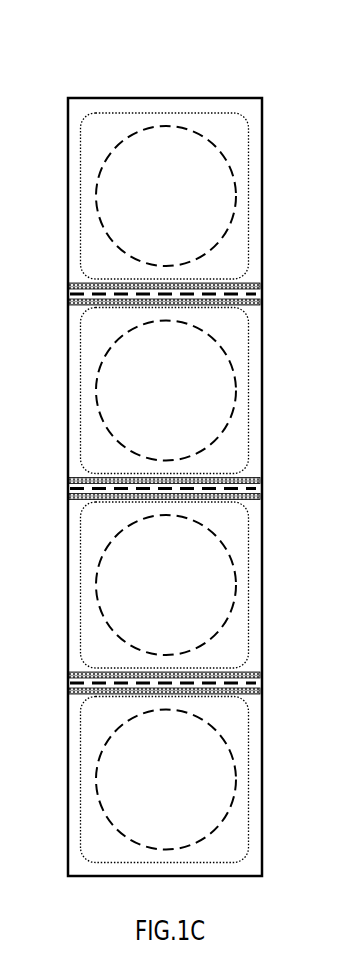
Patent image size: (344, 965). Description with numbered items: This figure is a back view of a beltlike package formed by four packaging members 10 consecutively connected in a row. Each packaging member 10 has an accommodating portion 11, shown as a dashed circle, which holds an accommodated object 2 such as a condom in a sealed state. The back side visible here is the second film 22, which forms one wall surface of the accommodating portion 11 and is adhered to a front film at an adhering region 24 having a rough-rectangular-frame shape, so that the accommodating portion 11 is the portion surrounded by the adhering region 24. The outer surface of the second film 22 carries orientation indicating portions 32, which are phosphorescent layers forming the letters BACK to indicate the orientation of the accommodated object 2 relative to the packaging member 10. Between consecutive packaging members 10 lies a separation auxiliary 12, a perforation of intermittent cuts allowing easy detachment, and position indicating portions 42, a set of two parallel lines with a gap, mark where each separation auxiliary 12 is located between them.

The packaging member 10 is at (137, 452).
The accommodating portion 11 is at (164, 458).
The separation auxiliary 12 is at (105, 293).
The accommodated object 2 is at (234, 172).
The second film 22 is at (205, 107).
The adhering region 24 is at (245, 113).
The orientation indicating portion 32 is at (206, 233).
The position indicating portion 42 is at (170, 474).